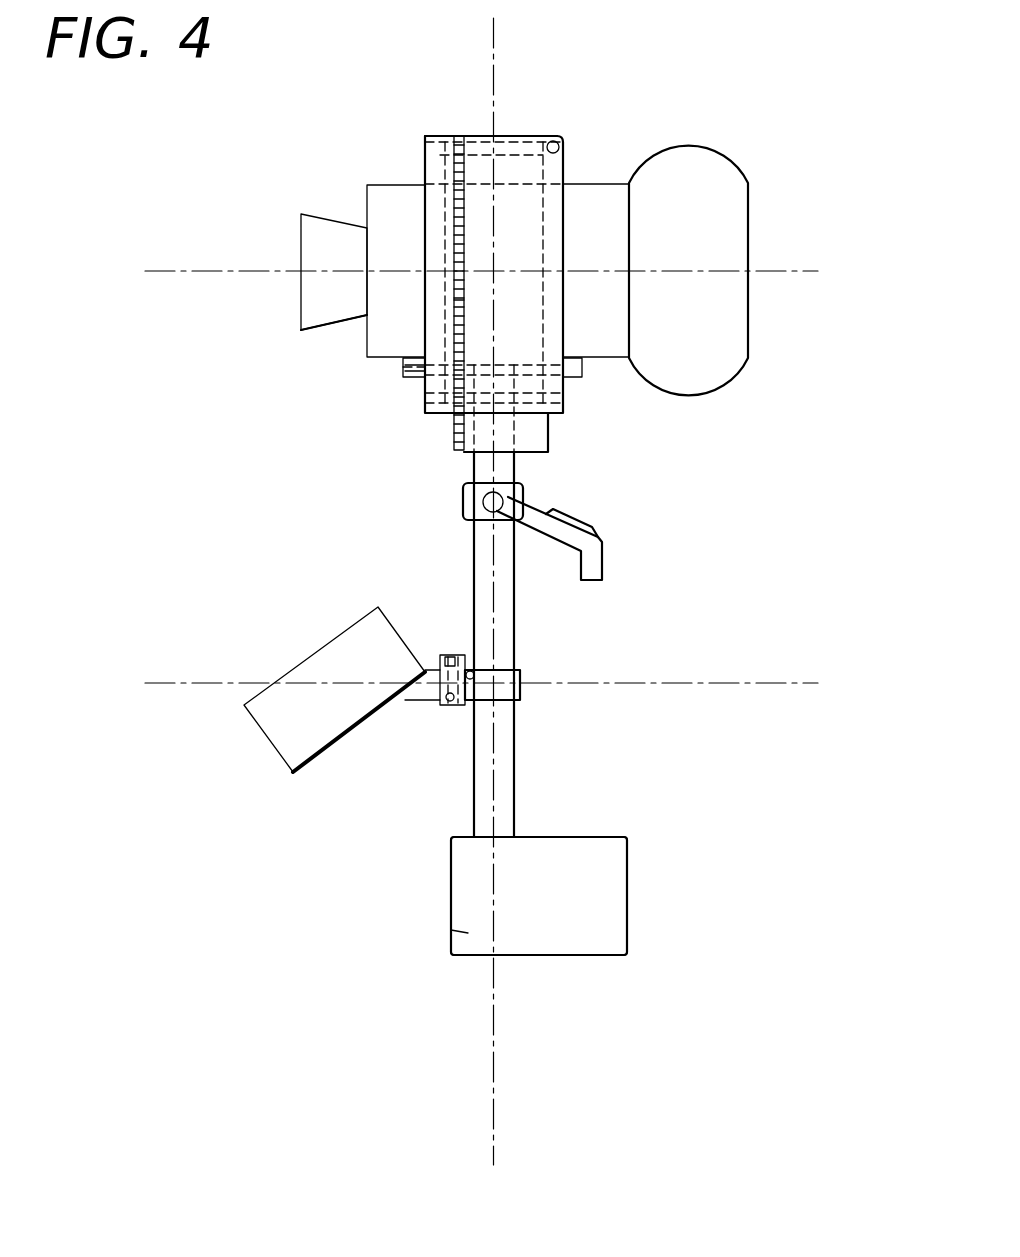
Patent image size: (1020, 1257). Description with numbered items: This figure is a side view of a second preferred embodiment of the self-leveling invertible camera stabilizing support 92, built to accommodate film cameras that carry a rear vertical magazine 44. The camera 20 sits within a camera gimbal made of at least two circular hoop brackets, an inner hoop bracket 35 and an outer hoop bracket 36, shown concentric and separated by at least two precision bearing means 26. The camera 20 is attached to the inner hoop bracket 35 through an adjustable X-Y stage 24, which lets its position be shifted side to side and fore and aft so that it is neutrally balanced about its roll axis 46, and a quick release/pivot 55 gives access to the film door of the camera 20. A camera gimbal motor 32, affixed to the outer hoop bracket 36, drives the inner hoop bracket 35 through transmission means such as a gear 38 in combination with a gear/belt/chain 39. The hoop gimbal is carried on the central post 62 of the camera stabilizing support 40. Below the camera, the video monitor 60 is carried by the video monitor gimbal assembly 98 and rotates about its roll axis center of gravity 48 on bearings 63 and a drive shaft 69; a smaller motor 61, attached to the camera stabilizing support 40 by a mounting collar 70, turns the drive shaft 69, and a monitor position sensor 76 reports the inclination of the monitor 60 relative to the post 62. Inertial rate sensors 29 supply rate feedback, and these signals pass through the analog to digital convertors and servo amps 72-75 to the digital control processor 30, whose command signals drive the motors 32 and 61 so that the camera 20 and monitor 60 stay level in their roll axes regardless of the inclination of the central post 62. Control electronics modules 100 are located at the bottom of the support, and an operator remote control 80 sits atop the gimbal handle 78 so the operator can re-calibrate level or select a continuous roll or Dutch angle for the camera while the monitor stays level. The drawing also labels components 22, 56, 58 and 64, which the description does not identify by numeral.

The camera 20 is at (394, 206).
The lens 22 is at (333, 236).
The adjustable X-Y stage 24 is at (400, 368).
The precision bearing means 26 is at (436, 300).
The inertial rate sensors 29 is at (405, 378).
The digital control processor 30 is at (468, 896).
The camera gimbal motor 32 is at (540, 438).
The inner hoop bracket 35 is at (560, 145).
The outer hoop bracket 36 is at (532, 137).
The gear 38 is at (462, 438).
The gear/belt/chain 39 is at (449, 346).
The camera stabilizing support 40 is at (445, 596).
The rear vertical magazine 44 is at (725, 227).
The roll axis 46 is at (178, 268).
The roll axis center of gravity 48 is at (648, 683).
The quick release/pivot 55 is at (603, 358).
The vertical axis 56 is at (494, 40).
The base housing 58 is at (468, 856).
The video monitor 60 is at (290, 758).
The smaller motor 61 is at (440, 658).
The central post 62 is at (505, 796).
The bearings 63 is at (442, 698).
The pivot collar 64 is at (464, 502).
The drive shaft 69 is at (452, 695).
The mounting collar 70 is at (521, 679).
The analog to digital convertors and servo amps 72-75 is at (468, 933).
The monitor position sensor 76 is at (465, 653).
The gimbal handle 78 is at (593, 562).
The operator remote control 80 is at (580, 515).
The self-leveling invertible camera stabilizing support 92 is at (752, 588).
The video monitor gimbal assembly 98 is at (462, 710).
The control electronics modules 100 is at (435, 979).